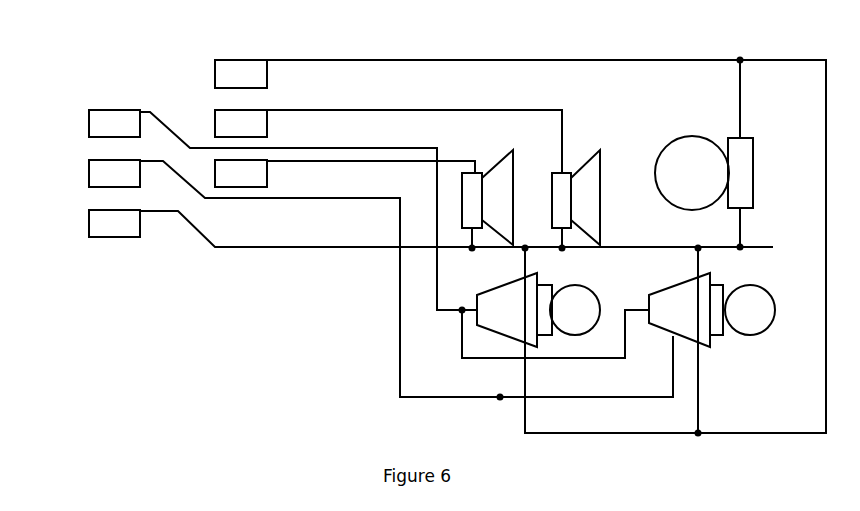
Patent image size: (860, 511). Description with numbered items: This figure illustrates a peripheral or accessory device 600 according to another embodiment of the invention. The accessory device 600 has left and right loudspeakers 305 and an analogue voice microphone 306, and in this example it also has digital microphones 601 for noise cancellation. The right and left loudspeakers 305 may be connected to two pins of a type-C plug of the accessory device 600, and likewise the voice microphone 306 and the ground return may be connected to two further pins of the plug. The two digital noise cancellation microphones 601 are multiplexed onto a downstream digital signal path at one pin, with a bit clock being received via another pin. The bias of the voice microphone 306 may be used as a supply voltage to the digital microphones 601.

The peripheral or accessory device 600 is at (178, 63).
The left and right loudspeakers 305 is at (515, 157).
The analogue voice microphone 306 is at (672, 140).
The digital microphones 601 is at (595, 294).